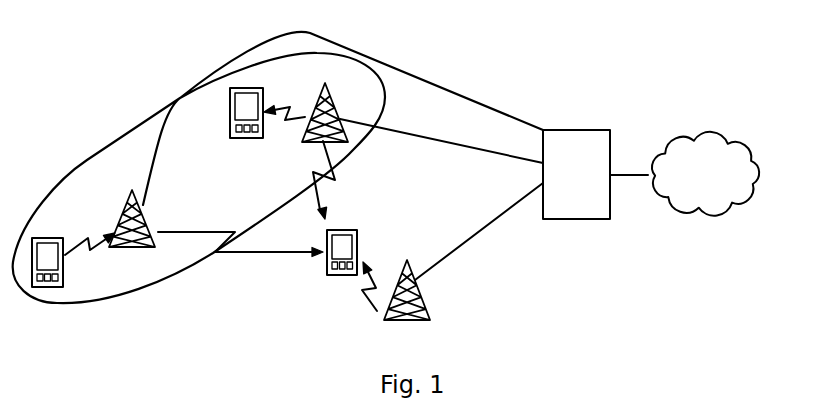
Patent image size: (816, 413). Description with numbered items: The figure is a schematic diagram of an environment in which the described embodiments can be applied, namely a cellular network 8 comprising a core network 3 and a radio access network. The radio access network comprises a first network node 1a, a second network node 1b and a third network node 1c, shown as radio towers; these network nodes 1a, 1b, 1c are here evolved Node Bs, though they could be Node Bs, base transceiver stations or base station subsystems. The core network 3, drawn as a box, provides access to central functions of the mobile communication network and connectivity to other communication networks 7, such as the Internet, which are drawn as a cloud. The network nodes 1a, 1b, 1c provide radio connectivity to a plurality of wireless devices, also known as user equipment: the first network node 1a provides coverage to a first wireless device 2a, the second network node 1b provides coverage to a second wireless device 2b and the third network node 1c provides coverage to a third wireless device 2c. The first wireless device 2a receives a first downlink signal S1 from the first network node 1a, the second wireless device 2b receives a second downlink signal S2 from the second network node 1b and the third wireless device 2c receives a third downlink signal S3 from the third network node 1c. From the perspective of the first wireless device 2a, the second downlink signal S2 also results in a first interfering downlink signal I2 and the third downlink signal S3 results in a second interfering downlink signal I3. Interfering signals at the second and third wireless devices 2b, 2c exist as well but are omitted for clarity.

The first network node 1a is at (427, 306).
The second network node 1b is at (332, 99).
The third network node 1c is at (123, 212).
The first wireless device 2a is at (357, 232).
The second wireless device 2b is at (264, 101).
The third wireless device 2c is at (63, 275).
The core network 3 is at (586, 186).
The other communication networks 7 is at (713, 186).
The cellular network 8 is at (627, 67).
The first downlink signal S1 is at (359, 288).
The second downlink signal S2 is at (284, 129).
The third downlink signal S3 is at (90, 234).
The first interfering downlink signal I2 is at (331, 180).
The second interfering downlink signal I3 is at (240, 259).